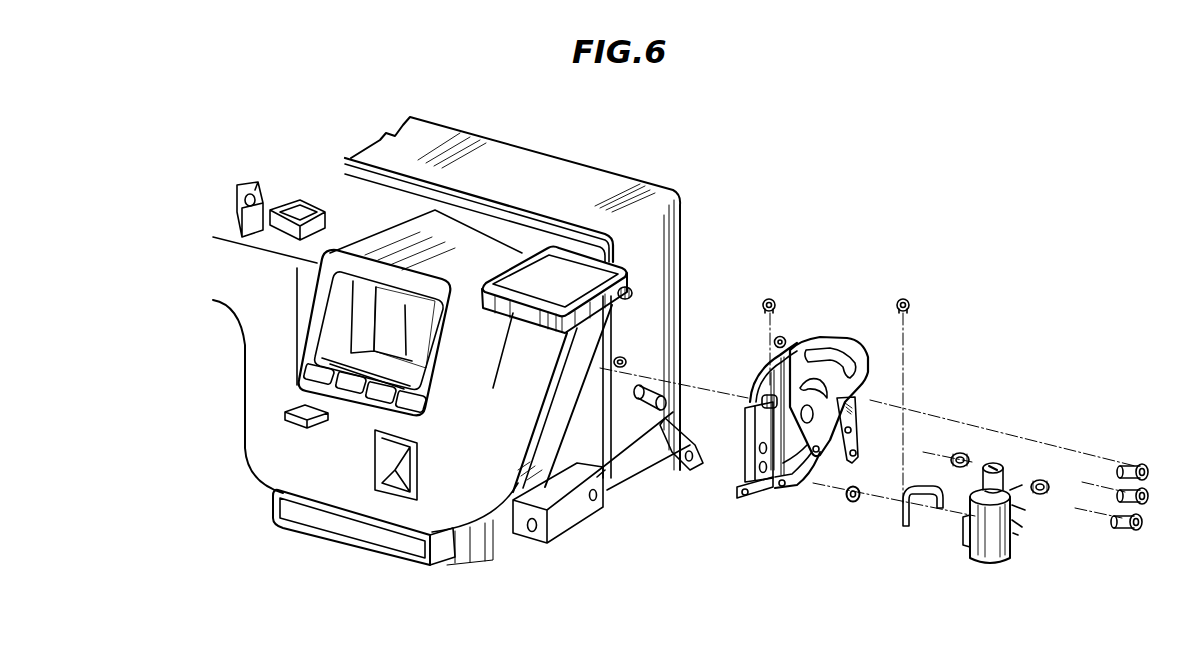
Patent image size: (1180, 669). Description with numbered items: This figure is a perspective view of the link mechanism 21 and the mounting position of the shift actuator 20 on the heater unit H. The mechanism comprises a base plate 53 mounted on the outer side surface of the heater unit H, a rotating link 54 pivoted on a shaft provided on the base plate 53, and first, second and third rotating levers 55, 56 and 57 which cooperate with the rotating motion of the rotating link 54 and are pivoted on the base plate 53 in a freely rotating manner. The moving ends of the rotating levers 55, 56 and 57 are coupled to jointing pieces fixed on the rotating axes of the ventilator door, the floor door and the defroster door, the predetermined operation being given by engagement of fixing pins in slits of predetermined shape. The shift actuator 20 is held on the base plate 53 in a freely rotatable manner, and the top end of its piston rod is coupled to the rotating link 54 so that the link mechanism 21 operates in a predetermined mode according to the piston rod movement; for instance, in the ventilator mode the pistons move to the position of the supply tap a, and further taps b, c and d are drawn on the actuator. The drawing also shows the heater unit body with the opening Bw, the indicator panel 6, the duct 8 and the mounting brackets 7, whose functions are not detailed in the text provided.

The heater unit H is at (581, 175).
The display window Bw is at (419, 308).
The indicator panel 6 is at (413, 344).
The duct 8 is at (539, 302).
The mounting brackets 7 is at (377, 540).
The base plate 53 is at (755, 432).
The rotating link 54 is at (775, 375).
The first rotating lever 55 is at (782, 337).
The link mechanism 21 is at (826, 345).
The second rotating lever 56 is at (855, 450).
The third rotating lever 57 is at (767, 488).
The shift actuator 20 is at (1000, 467).
The supply tap a is at (1018, 535).
The lead wire b is at (1022, 527).
The lead wire c is at (1025, 510).
The lead wire d is at (1018, 488).